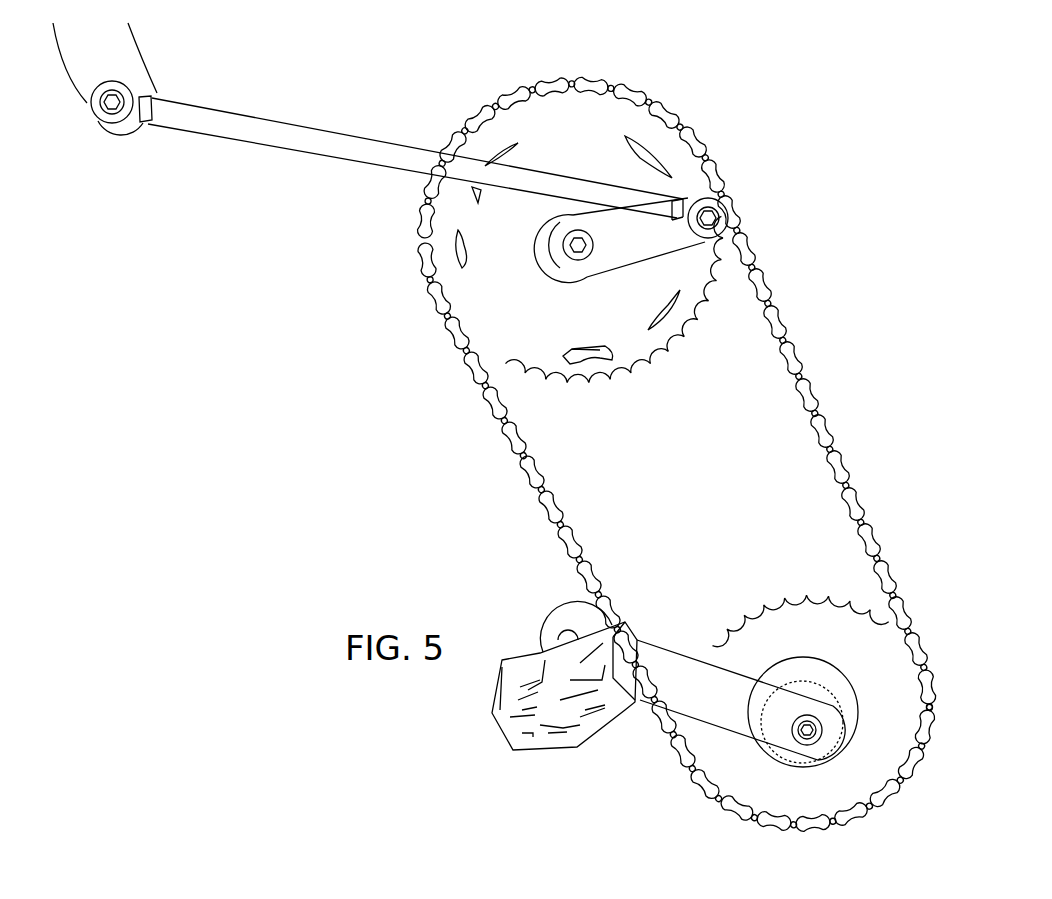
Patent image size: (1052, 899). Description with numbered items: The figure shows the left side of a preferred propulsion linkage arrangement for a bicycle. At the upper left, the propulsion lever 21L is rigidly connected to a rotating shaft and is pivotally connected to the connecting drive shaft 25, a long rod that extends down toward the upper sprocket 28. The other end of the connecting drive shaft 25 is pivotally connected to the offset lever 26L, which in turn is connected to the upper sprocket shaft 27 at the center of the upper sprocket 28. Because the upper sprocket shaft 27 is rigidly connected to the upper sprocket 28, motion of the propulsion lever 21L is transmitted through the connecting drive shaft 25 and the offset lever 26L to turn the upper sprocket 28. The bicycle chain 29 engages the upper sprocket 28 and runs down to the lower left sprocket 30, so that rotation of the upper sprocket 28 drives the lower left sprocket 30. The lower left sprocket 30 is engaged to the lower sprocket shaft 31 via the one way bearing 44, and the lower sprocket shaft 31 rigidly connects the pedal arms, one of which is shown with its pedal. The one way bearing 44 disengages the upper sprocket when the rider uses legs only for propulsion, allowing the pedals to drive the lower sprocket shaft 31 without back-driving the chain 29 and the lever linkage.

The propulsion lever 21L is at (140, 43).
The connecting drive shaft 25 is at (298, 158).
The upper sprocket 28 is at (542, 117).
The upper sprocket shaft 27 is at (575, 252).
The offset lever 26L is at (648, 259).
The bicycle chain 29 is at (559, 550).
The lower left sprocket 30 is at (777, 603).
The one way bearing 44 is at (808, 683).
The lower sprocket shaft 31 is at (798, 740).